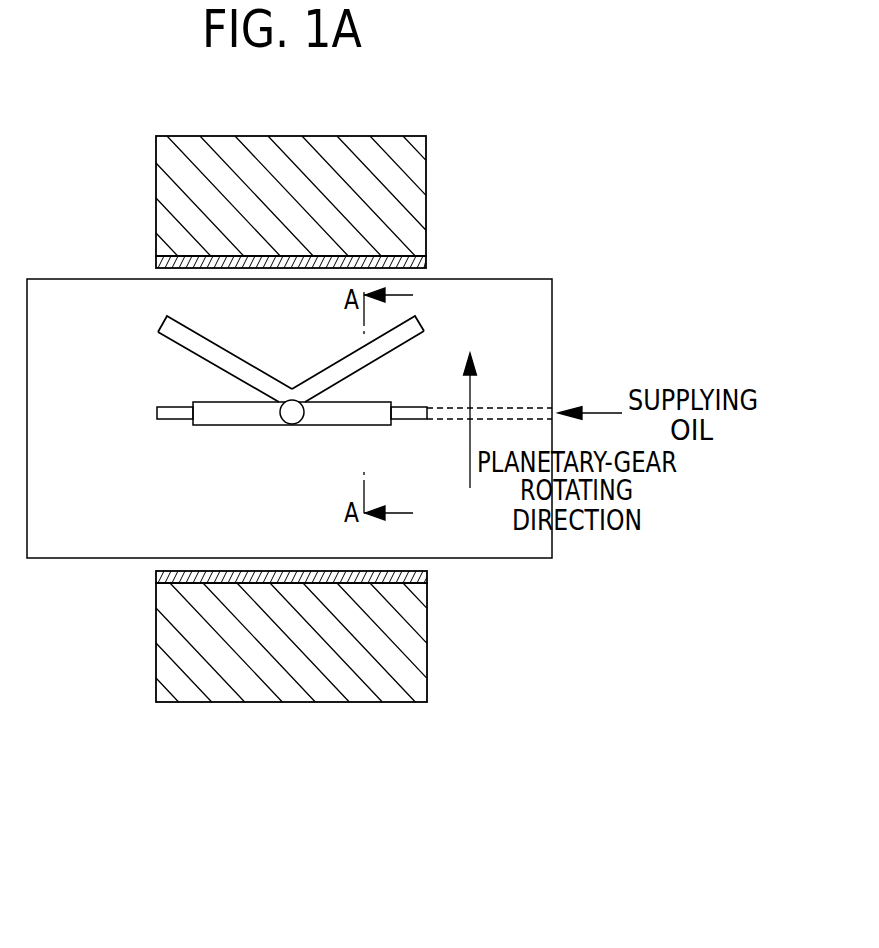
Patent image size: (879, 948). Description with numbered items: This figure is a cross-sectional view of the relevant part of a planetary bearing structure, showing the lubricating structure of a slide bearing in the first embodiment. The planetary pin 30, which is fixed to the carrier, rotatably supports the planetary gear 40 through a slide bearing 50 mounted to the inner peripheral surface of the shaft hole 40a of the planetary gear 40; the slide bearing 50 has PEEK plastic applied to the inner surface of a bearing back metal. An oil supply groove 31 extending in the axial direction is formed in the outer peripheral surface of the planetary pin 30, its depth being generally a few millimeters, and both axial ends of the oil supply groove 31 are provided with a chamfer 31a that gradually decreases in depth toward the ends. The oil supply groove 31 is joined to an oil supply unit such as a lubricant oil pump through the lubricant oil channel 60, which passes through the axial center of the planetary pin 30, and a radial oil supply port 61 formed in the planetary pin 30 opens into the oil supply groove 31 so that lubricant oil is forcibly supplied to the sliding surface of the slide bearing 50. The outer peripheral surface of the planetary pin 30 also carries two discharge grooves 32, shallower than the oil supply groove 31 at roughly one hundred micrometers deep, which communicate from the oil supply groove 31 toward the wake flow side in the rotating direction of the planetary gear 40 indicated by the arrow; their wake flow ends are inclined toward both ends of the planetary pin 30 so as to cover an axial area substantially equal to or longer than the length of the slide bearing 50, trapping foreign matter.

The planetary pin 30 is at (538, 306).
The oil supply groove 31 is at (239, 416).
The chamfer 31a is at (175, 413).
The discharge groove 32 is at (175, 338).
The planetary gear 40 is at (426, 171).
The shaft hole 40a is at (175, 580).
The slide bearing 50 is at (426, 262).
The lubricant oil channel 60 is at (520, 412).
The oil supply port 61 is at (291, 418).